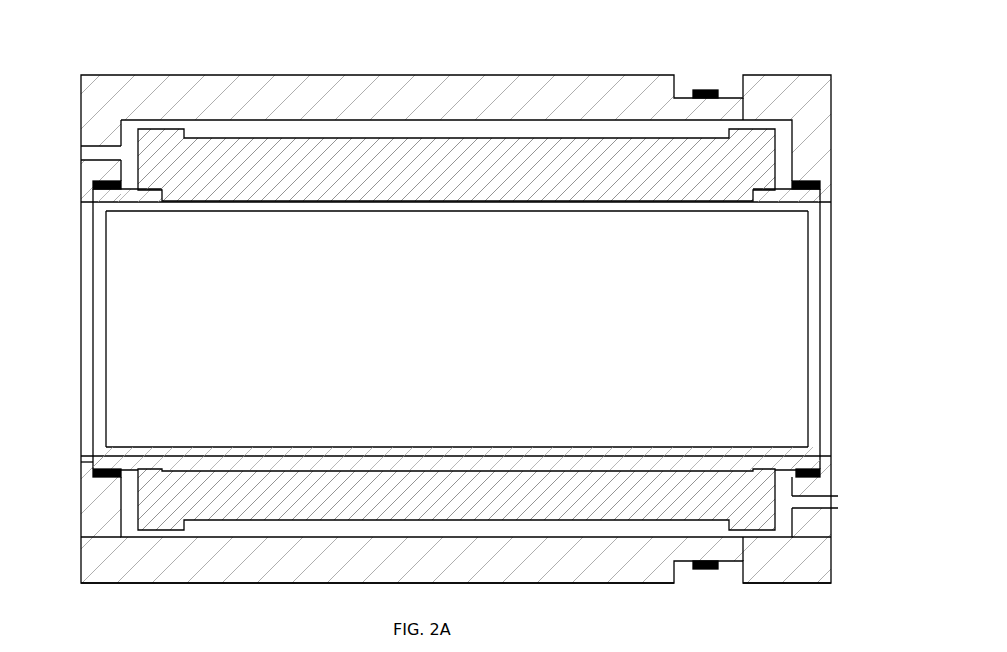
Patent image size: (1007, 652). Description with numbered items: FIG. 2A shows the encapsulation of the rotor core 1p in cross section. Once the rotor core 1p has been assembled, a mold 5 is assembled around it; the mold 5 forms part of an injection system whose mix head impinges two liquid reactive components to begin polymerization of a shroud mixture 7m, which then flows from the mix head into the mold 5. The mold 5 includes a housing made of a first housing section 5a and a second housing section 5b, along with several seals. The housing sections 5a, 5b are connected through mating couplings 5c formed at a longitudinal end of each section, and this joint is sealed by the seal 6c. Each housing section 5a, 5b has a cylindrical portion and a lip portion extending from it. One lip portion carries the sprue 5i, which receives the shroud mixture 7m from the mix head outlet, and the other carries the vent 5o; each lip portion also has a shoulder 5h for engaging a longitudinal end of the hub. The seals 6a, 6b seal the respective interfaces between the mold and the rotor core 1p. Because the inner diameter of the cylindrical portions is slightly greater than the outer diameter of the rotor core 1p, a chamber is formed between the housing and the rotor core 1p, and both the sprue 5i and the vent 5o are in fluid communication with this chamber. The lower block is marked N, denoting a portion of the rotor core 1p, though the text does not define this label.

The mold 5 is at (65, 95).
The sprue 5i is at (87, 153).
The shoulder 5h is at (88, 462).
The vent 5o is at (827, 502).
The first housing section 5a is at (196, 572).
The second housing section 5b is at (805, 572).
The mating couplings 5c is at (685, 597).
The seal 6a is at (110, 468).
The seal 6b is at (800, 468).
The seal 6c is at (705, 90).
The rotor core 1p is at (418, 265).
The shroud mixture 7m is at (317, 651).
The magnet N is at (456, 499).